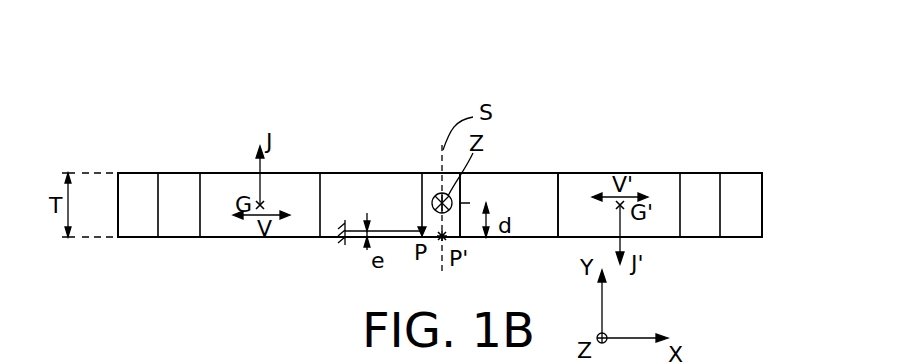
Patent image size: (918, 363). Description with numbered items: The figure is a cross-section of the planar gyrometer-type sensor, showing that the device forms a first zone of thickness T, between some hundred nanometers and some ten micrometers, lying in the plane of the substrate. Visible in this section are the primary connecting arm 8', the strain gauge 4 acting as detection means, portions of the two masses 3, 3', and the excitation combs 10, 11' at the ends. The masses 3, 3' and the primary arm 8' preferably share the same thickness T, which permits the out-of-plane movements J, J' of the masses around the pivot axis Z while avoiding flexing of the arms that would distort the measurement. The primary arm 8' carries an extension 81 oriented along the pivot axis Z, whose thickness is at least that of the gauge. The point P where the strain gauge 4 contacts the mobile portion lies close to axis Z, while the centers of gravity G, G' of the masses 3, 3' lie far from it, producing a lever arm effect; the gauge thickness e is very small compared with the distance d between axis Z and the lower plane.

The excitation comb 10 is at (130, 227).
The mass 3 is at (187, 230).
The strain gauge 4 is at (397, 229).
The extension 81 is at (435, 182).
The primary connecting arm 8' is at (509, 231).
The mass 3' is at (696, 230).
The excitation comb 11' is at (745, 230).